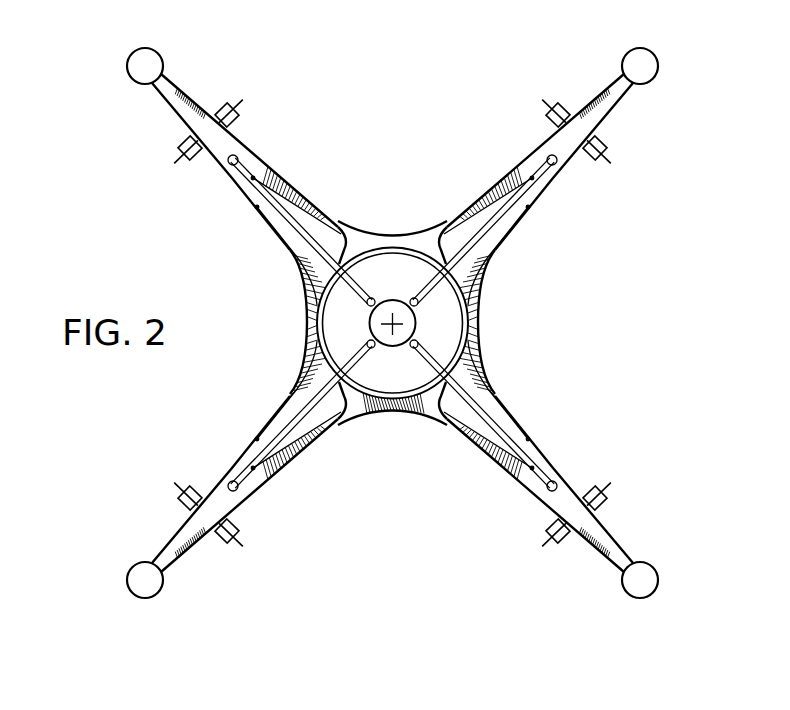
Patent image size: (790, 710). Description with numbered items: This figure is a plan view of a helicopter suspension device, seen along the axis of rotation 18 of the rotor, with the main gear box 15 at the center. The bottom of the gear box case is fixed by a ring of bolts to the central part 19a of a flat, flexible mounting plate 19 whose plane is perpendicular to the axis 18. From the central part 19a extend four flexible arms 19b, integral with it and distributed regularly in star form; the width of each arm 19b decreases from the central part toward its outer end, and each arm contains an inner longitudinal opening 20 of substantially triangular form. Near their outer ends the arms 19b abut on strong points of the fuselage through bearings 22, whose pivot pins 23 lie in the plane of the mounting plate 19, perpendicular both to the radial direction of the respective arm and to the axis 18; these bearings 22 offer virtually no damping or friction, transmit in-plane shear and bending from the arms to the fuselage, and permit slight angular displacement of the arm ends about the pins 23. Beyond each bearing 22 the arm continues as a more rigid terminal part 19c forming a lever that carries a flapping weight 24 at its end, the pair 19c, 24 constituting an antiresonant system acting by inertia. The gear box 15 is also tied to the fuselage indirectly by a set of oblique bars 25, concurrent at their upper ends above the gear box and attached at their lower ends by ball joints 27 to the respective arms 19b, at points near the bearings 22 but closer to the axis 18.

The main gear box 15 is at (442, 319).
The axis of rotation 18 is at (397, 330).
The flexible mounting plate 19 is at (414, 421).
The central part 19a is at (467, 350).
The flexible arms 19b is at (236, 175).
The rigid terminal part 19c is at (167, 555).
The inner longitudinal opening 20 is at (450, 220).
The bearings 22 is at (603, 158).
The pivot pins 23 is at (240, 538).
The flapping weight 24 is at (138, 70).
The oblique bars 25 is at (293, 222).
The ball joint 27 is at (243, 157).